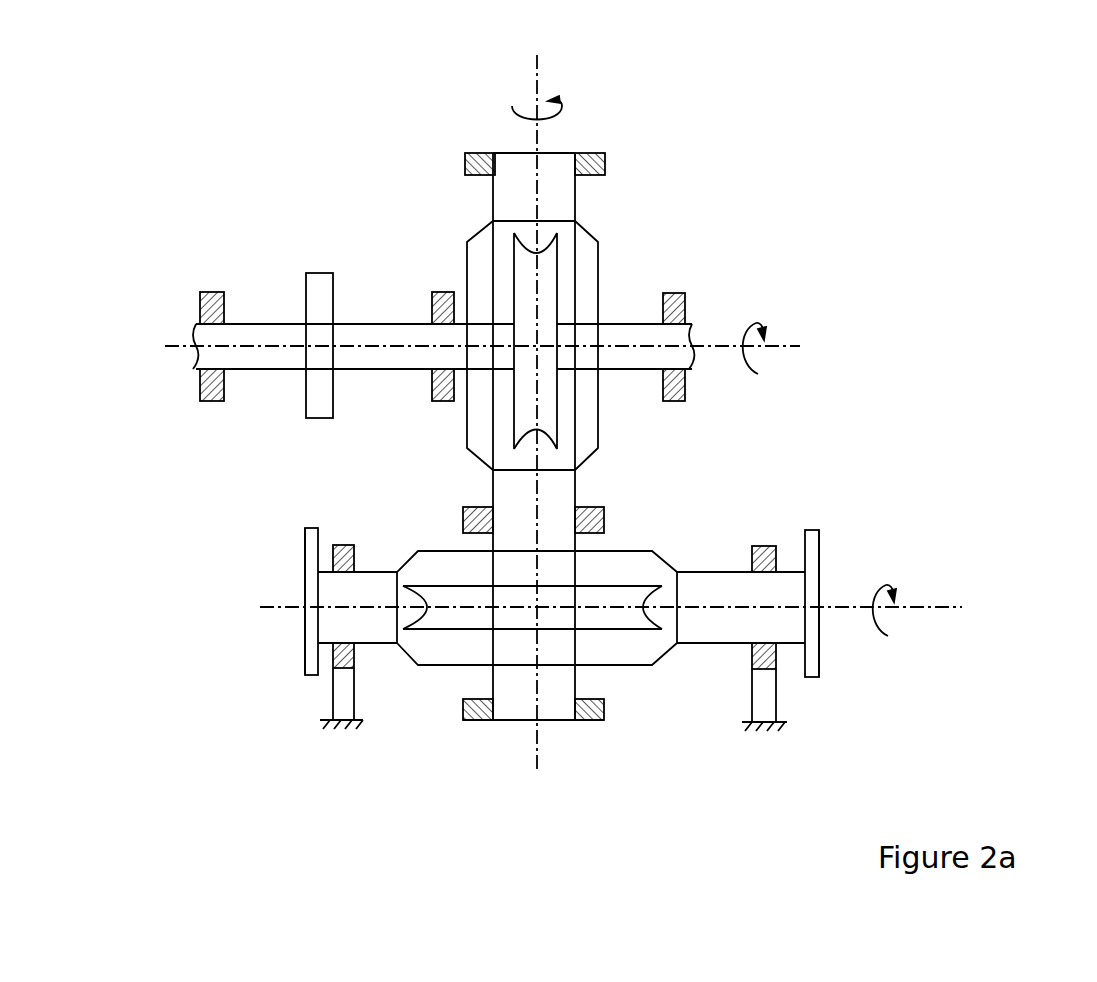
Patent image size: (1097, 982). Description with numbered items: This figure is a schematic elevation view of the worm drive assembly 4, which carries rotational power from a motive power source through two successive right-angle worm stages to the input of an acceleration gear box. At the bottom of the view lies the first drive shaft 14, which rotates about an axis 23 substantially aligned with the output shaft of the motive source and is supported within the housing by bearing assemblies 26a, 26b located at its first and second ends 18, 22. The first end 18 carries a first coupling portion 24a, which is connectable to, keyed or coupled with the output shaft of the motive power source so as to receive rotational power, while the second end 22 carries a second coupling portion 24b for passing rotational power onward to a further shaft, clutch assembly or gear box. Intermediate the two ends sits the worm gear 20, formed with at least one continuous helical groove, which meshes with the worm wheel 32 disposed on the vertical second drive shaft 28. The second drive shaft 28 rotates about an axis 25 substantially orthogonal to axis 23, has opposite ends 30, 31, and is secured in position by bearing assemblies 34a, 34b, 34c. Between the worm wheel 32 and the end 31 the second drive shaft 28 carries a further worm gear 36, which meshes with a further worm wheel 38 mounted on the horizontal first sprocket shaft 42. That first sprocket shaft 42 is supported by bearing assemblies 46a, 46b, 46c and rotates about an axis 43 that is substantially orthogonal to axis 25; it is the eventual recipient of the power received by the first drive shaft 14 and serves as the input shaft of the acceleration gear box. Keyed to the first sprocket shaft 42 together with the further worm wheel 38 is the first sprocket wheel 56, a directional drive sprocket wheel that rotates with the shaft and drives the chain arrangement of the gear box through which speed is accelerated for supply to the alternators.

The worm drive assembly 4 is at (942, 399).
The first drive shaft 14 is at (720, 623).
The first end 18 is at (288, 661).
The worm gear 20 is at (634, 655).
The second end 22 is at (842, 655).
The axis 23 is at (942, 607).
The first coupling portion 24a is at (310, 552).
The second coupling portion 24b is at (811, 558).
The axis 25 is at (540, 80).
The bearing assembly 26a is at (356, 747).
The bearing assembly 26b is at (777, 744).
The second drive shaft 28 is at (557, 168).
The end 30 is at (511, 760).
The end 31 is at (507, 116).
The worm wheel 32 is at (440, 587).
The bearing assembly 34a is at (457, 715).
The bearing assembly 34b is at (610, 509).
The bearing assembly 34c is at (612, 168).
The further worm gear 36 is at (590, 256).
The further worm wheel 38 is at (514, 270).
The first sprocket shaft 42 is at (677, 338).
The axis 43 is at (783, 345).
The bearing assembly 46a is at (690, 400).
The bearing assembly 46b is at (436, 405).
The bearing assembly 46c is at (198, 405).
The first sprocket wheel 56 is at (313, 395).